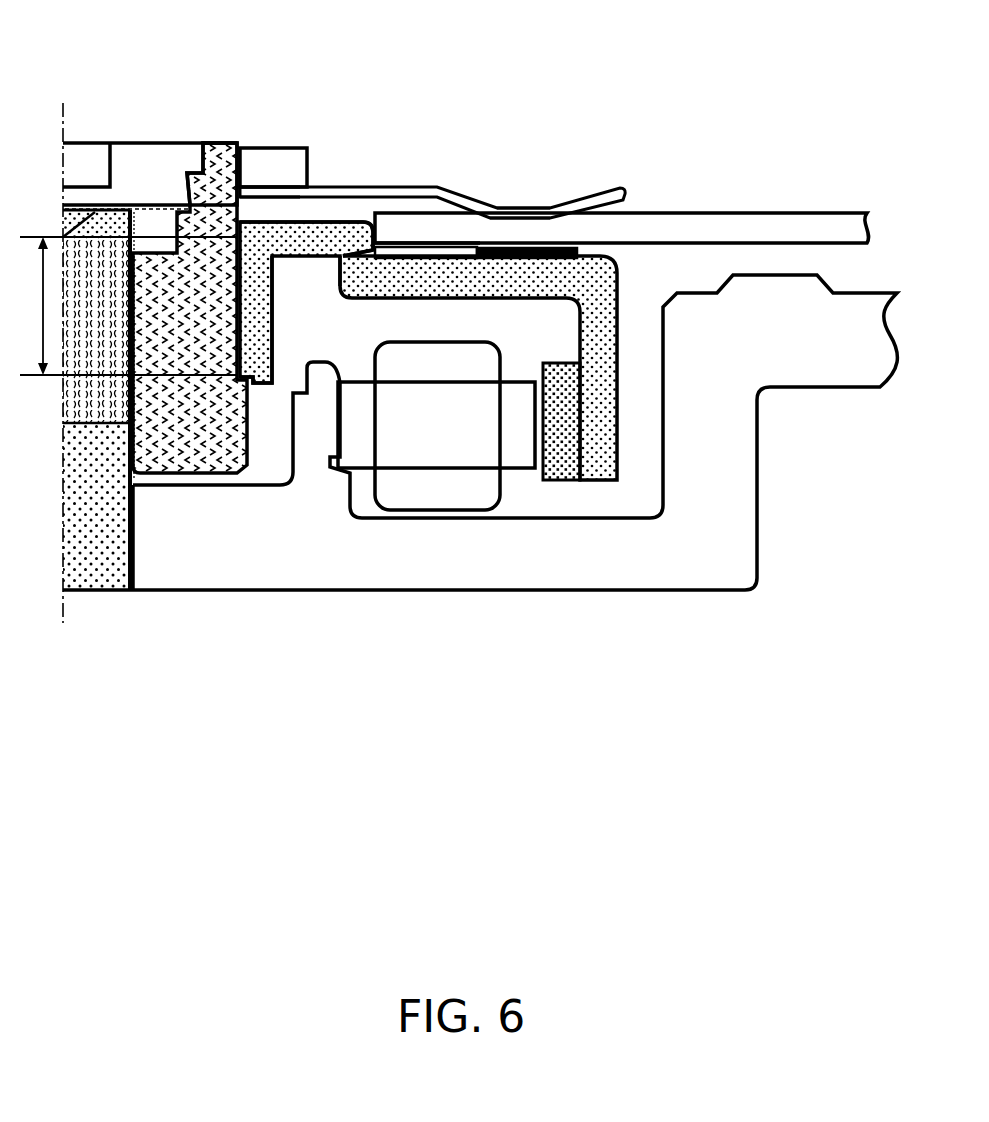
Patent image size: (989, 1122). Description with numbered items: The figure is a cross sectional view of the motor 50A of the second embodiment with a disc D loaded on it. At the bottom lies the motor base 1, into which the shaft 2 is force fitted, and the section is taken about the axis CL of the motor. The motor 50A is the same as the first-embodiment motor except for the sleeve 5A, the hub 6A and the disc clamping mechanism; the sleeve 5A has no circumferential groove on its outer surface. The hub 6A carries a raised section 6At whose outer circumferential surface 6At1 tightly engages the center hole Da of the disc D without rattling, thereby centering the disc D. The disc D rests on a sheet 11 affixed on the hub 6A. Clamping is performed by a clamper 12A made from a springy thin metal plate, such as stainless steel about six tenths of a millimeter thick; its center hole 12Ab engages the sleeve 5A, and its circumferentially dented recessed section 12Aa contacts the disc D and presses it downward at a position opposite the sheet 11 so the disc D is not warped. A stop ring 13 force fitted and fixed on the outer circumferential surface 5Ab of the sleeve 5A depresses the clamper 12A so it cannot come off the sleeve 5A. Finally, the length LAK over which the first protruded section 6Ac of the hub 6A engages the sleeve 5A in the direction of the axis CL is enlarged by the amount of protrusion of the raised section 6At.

The motor base 1 is at (578, 547).
The shaft 2 is at (95, 563).
The sleeve 5A is at (187, 427).
The outer circumferential surface of the sleeve 5Ab is at (200, 205).
The hub 6A is at (433, 277).
The raised section 6At is at (325, 222).
The outer circumferential surface of the raised section 6At1 is at (343, 256).
The first protruded section 6Ac is at (260, 325).
The sheet 11 is at (612, 246).
The clamper 12A is at (620, 187).
The recessed section 12Aa is at (538, 207).
The center hole 12Ab is at (262, 187).
The stop ring 13 is at (293, 167).
The disc D is at (787, 227).
The center hole Da is at (380, 235).
The motor 50A is at (835, 705).
The axis CL is at (63, 347).
The engaging length LAK is at (123, 306).